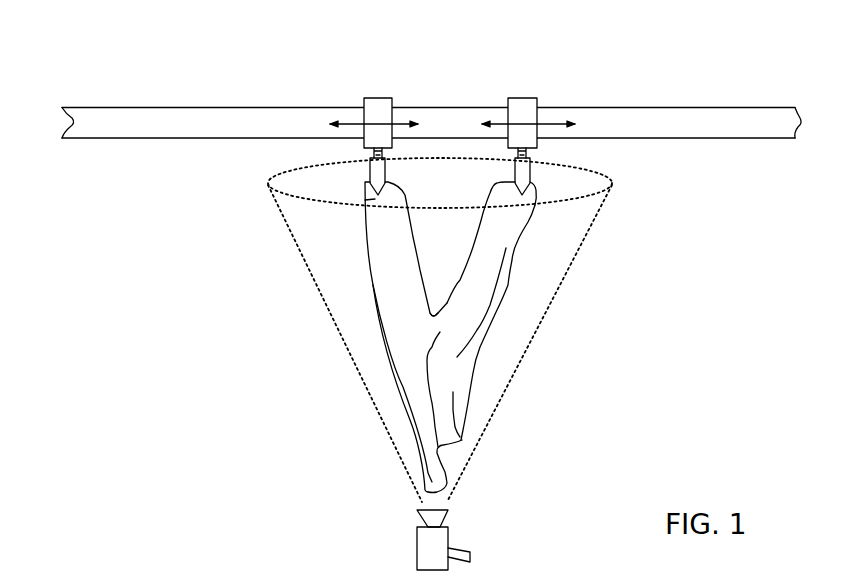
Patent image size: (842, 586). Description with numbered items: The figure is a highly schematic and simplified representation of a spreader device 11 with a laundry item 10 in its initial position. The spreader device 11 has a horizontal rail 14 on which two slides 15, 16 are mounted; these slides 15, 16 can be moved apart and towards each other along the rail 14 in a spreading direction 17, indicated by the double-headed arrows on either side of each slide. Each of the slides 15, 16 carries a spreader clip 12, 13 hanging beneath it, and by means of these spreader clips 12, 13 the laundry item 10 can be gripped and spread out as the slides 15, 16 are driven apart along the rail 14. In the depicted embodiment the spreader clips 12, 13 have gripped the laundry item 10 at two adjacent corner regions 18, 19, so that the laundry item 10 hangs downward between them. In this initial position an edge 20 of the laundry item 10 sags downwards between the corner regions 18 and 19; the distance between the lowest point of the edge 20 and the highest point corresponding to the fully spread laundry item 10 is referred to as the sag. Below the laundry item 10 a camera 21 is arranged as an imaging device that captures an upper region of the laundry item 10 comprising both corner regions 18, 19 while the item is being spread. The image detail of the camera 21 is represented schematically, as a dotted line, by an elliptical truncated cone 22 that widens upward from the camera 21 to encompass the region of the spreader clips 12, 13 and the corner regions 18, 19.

The laundry item 10 is at (487, 267).
The spreader device 11 is at (621, 93).
The spreader clip 12 is at (526, 172).
The spreader clip 13 is at (375, 171).
The rail 14 is at (160, 117).
The slide 15 is at (522, 98).
The slide 16 is at (368, 104).
The spreading direction 17 is at (347, 121).
The corner region 18 is at (375, 199).
The corner region 19 is at (535, 190).
The edge 20 is at (445, 305).
The camera 21 is at (440, 542).
The elliptical truncated cone 22 is at (490, 424).